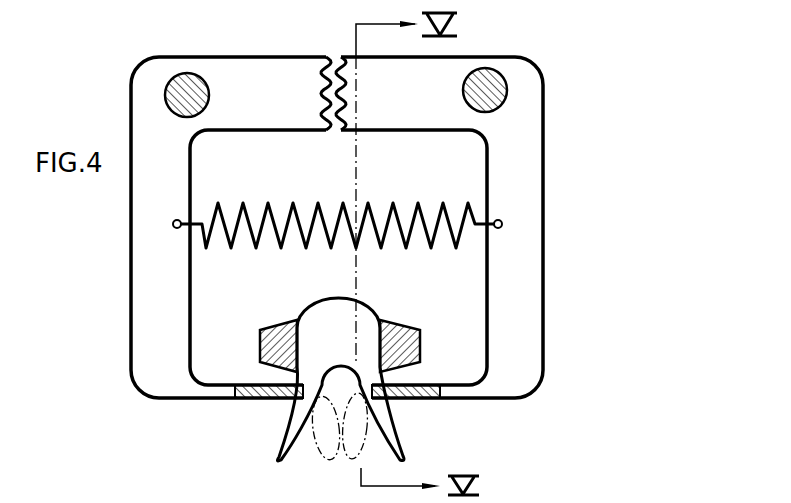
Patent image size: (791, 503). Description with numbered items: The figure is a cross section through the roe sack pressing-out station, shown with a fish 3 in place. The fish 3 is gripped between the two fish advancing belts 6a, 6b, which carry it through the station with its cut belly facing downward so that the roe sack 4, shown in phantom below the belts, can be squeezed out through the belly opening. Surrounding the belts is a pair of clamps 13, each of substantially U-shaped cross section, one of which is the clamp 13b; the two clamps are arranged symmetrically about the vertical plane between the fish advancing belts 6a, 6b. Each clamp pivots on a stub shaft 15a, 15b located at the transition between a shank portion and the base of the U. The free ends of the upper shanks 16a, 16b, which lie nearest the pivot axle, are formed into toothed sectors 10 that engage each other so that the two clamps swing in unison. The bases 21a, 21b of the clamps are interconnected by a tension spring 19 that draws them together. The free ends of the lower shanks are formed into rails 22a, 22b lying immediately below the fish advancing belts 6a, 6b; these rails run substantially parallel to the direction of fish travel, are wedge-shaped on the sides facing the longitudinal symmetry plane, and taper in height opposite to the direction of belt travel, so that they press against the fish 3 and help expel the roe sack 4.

The fish 3 is at (331, 348).
The roe sack 4 is at (326, 463).
The fish advancing belt 6a is at (407, 328).
The fish advancing belt 6b is at (268, 330).
The toothed sector 10 is at (342, 132).
The clamp 13 is at (337, 227).
The clamp 13b is at (200, 227).
The stub shaft 15a is at (507, 78).
The stub shaft 15b is at (178, 82).
The shank 16a is at (425, 112).
The shank 16b is at (248, 80).
The tension spring 19 is at (246, 212).
The base 21a is at (545, 181).
The base 21b is at (150, 289).
The rail 22a is at (420, 400).
The rail 22b is at (262, 399).